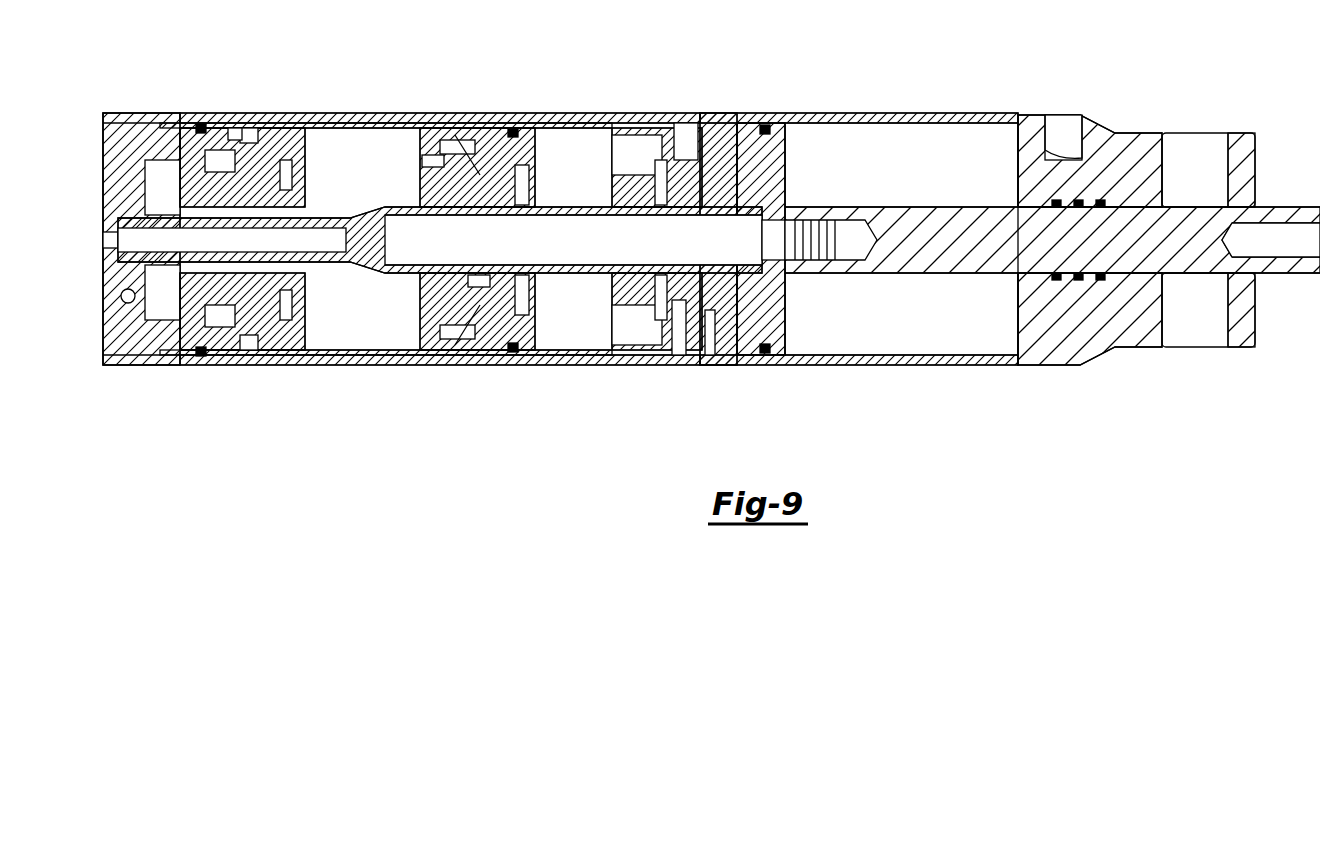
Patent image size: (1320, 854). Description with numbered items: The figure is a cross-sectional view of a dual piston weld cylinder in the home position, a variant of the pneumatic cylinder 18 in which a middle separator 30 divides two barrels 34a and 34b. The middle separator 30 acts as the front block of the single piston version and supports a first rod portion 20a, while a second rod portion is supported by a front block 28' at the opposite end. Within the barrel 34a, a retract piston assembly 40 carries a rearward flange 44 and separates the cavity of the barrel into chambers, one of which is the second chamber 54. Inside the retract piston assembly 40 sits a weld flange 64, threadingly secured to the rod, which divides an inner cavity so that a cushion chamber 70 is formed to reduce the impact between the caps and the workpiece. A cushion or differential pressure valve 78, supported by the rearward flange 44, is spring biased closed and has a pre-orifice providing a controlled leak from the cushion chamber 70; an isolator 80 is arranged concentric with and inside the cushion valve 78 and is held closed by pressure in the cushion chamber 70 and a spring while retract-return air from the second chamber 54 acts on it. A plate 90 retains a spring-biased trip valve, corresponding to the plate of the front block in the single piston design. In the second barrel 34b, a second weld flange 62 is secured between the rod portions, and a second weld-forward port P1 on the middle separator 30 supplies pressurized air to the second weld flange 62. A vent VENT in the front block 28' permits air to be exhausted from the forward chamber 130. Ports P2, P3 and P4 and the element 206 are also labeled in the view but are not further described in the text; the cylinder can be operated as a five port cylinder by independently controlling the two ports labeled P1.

The pneumatic cylinder 18 is at (772, 75).
The first rod portion 20a is at (560, 250).
The front block 28' is at (1136, 198).
The middle separator 30 is at (711, 113).
The barrel 34a is at (433, 113).
The barrel 34b is at (883, 113).
The retract piston assembly 40 is at (332, 113).
The rearward flange 44 is at (203, 113).
The second chamber 54 is at (570, 113).
The second weld flange 62 is at (765, 157).
The weld flange 64 is at (240, 113).
The fourth chamber 70 is at (363, 113).
The cushion valve 78 is at (423, 161).
The isolator 80 is at (478, 273).
The plate 90 is at (618, 296).
The forward chamber 130 is at (870, 318).
The output rod 206 is at (1015, 256).
The second weld-forward port P1 is at (711, 362).
The port P2 is at (677, 345).
The port P3 is at (125, 296).
The port P4 is at (684, 113).
The vent VENT is at (1063, 125).